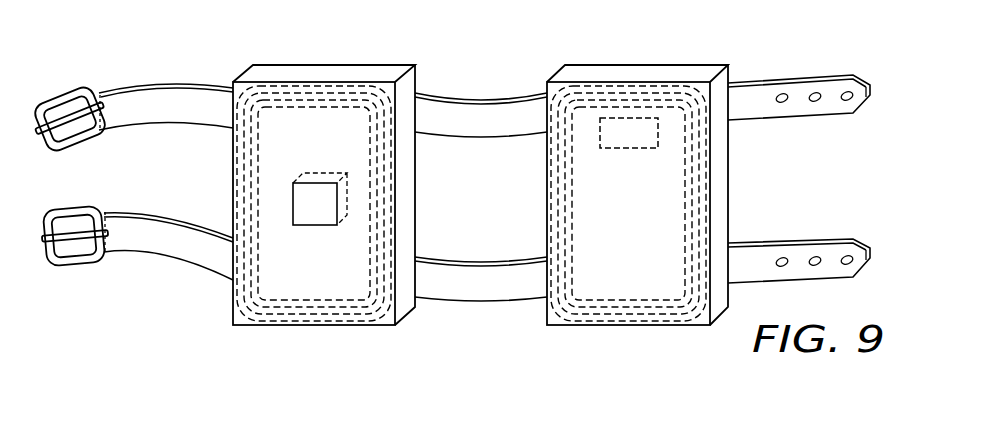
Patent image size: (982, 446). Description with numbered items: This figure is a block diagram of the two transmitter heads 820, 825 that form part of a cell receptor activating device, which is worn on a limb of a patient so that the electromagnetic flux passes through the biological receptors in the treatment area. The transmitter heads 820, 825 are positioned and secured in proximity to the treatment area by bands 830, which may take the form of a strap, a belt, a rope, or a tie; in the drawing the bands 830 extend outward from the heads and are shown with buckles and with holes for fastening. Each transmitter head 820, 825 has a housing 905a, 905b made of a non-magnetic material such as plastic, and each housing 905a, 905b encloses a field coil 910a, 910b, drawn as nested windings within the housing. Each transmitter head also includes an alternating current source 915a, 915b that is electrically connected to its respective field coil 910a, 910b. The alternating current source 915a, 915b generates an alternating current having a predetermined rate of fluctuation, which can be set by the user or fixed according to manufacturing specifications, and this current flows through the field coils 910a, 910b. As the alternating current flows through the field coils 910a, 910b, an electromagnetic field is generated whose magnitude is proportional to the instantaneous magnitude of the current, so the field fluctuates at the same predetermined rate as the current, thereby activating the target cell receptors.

The transmitter head 820 is at (728, 190).
The transmitter head 825 is at (233, 175).
The bands 830 is at (132, 103).
The housing 905a is at (320, 63).
The housing 905b is at (662, 63).
The field coil 910a is at (277, 322).
The field coil 910b is at (648, 322).
The alternating current source 915a is at (315, 230).
The alternating current source 915b is at (632, 150).